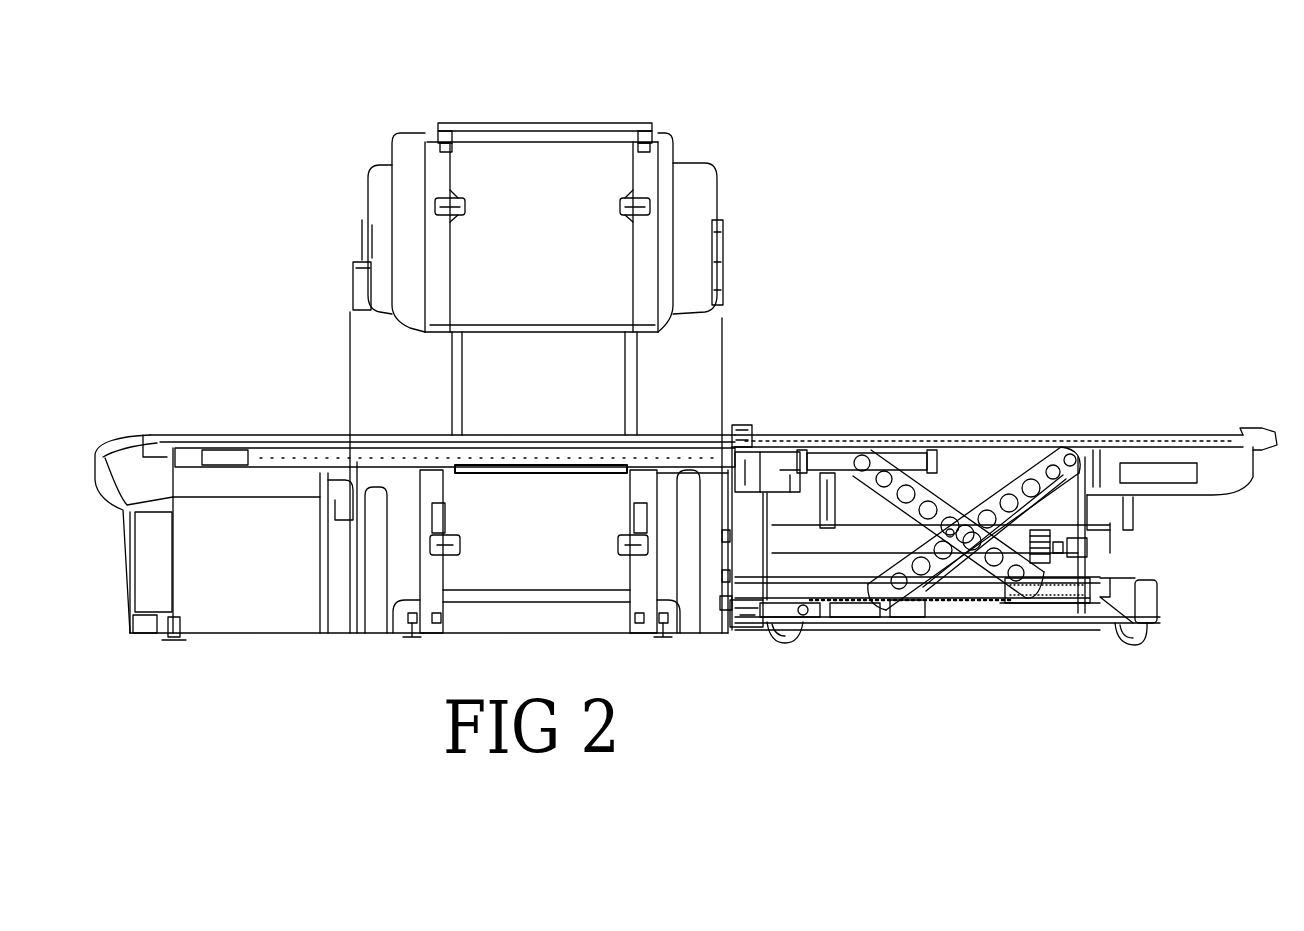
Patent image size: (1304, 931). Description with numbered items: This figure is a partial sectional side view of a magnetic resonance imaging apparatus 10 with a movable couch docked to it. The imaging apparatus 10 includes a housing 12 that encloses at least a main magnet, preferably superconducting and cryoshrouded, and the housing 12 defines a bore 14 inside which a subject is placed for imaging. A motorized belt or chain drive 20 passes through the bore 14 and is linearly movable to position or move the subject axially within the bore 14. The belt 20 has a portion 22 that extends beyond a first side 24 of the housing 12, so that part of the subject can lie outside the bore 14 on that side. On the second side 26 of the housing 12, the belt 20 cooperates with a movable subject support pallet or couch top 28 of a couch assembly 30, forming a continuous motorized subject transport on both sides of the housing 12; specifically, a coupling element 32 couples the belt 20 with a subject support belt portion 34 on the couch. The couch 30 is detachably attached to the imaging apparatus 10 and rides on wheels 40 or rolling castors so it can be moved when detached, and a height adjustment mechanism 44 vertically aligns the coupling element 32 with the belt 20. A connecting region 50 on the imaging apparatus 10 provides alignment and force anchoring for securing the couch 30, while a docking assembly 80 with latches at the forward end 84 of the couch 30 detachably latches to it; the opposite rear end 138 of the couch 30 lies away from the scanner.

The magnetic resonance imaging apparatus 10 is at (832, 114).
The housing 12 is at (558, 192).
The bore 14 is at (741, 387).
The motorized belt or chain drive 20 is at (380, 432).
The portion 22 is at (242, 389).
The first side 24 is at (318, 291).
The second side 26 is at (760, 294).
The subject support pallet or couch top 28 is at (958, 435).
The couch assembly 30 is at (1037, 355).
The coupling element 32 is at (748, 425).
The subject support belt portion 34 is at (1050, 437).
The wheels 40 is at (793, 628).
The height adjustment mechanism 44 is at (975, 595).
The connecting region 50 is at (728, 602).
The docking assembly 80 is at (891, 649).
The forward end 84 is at (763, 666).
The rear end 138 is at (1059, 666).